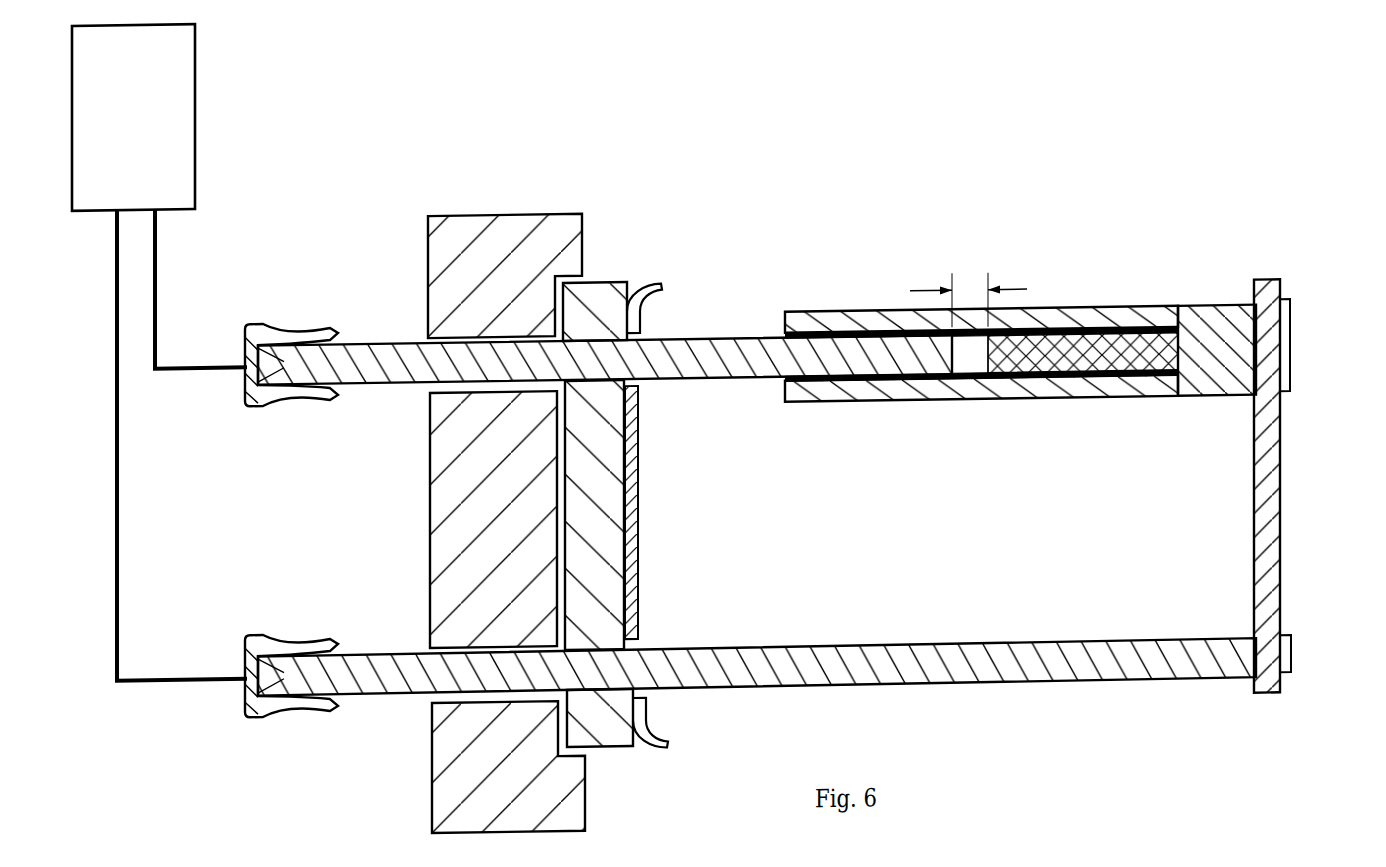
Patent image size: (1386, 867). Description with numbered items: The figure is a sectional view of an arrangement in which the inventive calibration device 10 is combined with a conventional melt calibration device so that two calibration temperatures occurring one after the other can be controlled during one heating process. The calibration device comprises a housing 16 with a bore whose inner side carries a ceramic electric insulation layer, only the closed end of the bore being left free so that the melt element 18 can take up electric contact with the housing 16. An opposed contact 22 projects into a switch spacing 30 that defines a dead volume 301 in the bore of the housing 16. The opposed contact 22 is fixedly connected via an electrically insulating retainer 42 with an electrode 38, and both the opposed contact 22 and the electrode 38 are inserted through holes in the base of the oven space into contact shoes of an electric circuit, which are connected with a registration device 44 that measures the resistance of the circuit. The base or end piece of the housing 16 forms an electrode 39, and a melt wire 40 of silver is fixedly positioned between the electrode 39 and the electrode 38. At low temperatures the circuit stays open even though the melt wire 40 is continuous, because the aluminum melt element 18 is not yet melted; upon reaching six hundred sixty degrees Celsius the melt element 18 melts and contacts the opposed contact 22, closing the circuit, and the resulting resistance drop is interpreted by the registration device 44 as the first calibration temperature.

The electrode assembly 10 is at (1029, 356).
The housing 16 is at (840, 317).
The melt element 18 is at (1097, 353).
The opposed contact 22 is at (705, 337).
The gap 30 is at (995, 287).
The dead volume 301 is at (970, 364).
The electrode 38 is at (1130, 684).
The electrode 39 is at (1205, 345).
The melt wire 40 is at (1282, 464).
The electrically insulating retainer 42 is at (606, 731).
The registration device 44 is at (148, 120).